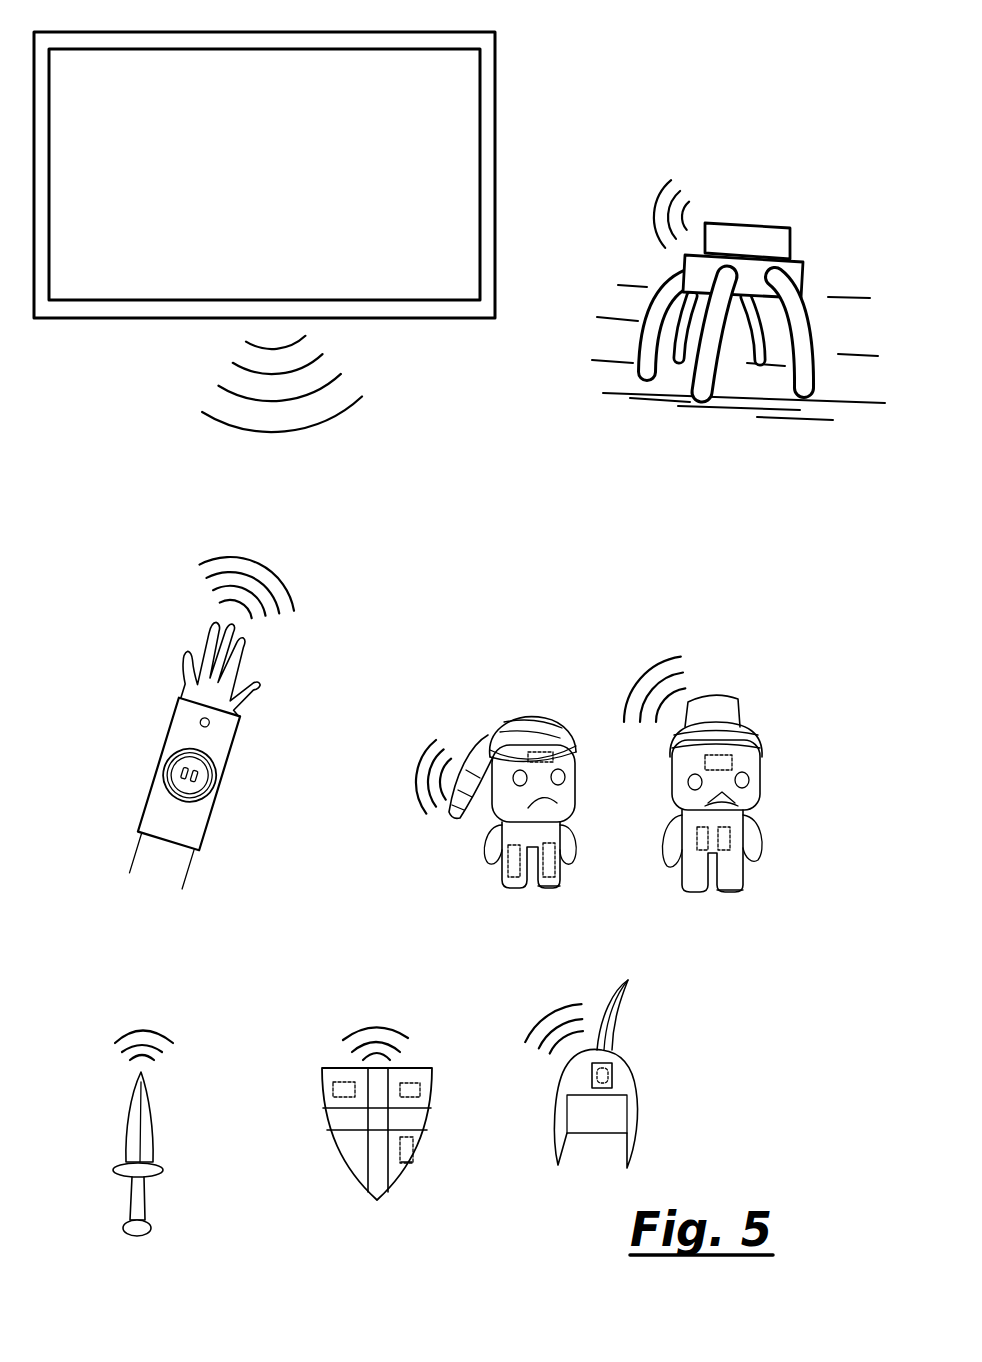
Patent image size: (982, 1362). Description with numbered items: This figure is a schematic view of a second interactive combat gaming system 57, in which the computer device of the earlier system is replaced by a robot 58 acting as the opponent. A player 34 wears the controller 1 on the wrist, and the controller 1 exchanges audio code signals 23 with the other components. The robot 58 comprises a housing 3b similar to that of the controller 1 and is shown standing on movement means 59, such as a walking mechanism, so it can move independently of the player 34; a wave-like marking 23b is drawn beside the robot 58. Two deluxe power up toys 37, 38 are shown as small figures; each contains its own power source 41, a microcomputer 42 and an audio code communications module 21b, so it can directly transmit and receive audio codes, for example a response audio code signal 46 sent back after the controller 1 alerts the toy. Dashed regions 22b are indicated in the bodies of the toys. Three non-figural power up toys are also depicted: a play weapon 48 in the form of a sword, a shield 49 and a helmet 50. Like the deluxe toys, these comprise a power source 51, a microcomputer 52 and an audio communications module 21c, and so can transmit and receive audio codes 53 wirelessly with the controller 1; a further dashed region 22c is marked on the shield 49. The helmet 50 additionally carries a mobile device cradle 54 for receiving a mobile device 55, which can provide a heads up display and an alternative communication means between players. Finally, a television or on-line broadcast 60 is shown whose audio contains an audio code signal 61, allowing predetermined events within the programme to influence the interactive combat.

The television or on-line broadcast 60 is at (264, 175).
The audio code signal 61 is at (344, 407).
The robot 58 is at (742, 280).
The housing 3b is at (738, 223).
The wireless signal 23b is at (658, 210).
The movement means 59 is at (802, 347).
The second interactive combat gaming system 57 is at (128, 510).
The controller 1 is at (189, 774).
The player 34 is at (167, 865).
The audio code signals 23 is at (287, 597).
The response audio code signal 46 is at (415, 772).
The deluxe power up toy 37 is at (507, 717).
The deluxe power up toy 38 is at (747, 735).
The power source 41 is at (553, 755).
The pocket 22b is at (552, 838).
The audio code communications module 21b is at (552, 872).
The microcomputer 42 is at (517, 867).
The play weapon 48 is at (153, 1140).
The audio codes 53 is at (133, 1032).
The microcomputer 52 is at (342, 1087).
The power source 51 is at (420, 1090).
The shield 49 is at (386, 1130).
The audio communications module 21c is at (413, 1147).
The pocket 22c is at (410, 1160).
The mobile device cradle 54 is at (613, 1067).
The mobile device 55 is at (608, 1078).
The helmet 50 is at (643, 1074).